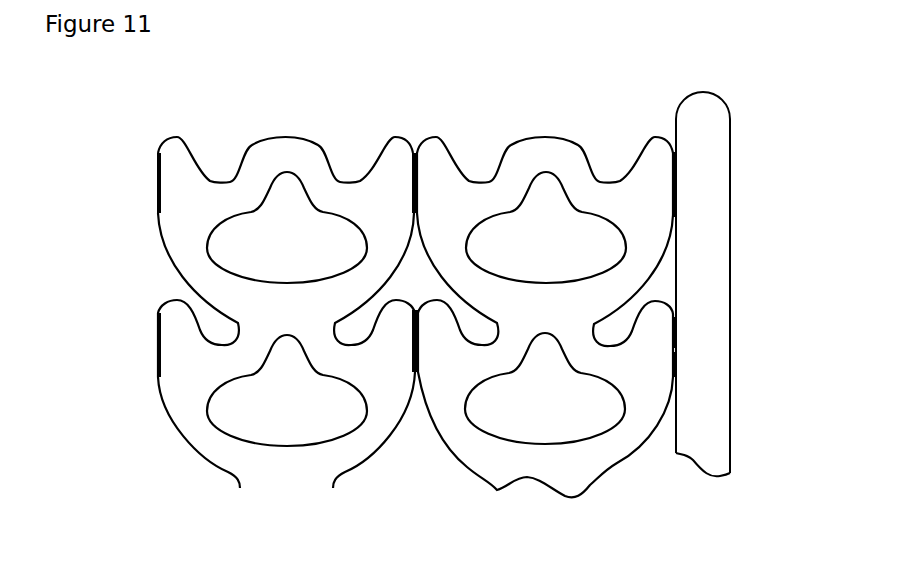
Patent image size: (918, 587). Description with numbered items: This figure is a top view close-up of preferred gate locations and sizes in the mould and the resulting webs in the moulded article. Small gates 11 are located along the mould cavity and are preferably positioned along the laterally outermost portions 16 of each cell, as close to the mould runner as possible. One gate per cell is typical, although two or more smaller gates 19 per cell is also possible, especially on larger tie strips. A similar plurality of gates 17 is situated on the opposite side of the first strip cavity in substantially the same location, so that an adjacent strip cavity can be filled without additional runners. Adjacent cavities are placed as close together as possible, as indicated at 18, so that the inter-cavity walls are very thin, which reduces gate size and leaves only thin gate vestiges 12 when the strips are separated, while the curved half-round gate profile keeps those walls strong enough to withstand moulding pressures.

The small gates 11 is at (677, 168).
The gate vestiges 12 is at (150, 350).
The laterally outermost portions 16 is at (662, 348).
The plurality of gates 17 is at (427, 333).
The adjacent cavities placed close together 18 is at (417, 398).
The smaller gates 19 is at (680, 365).